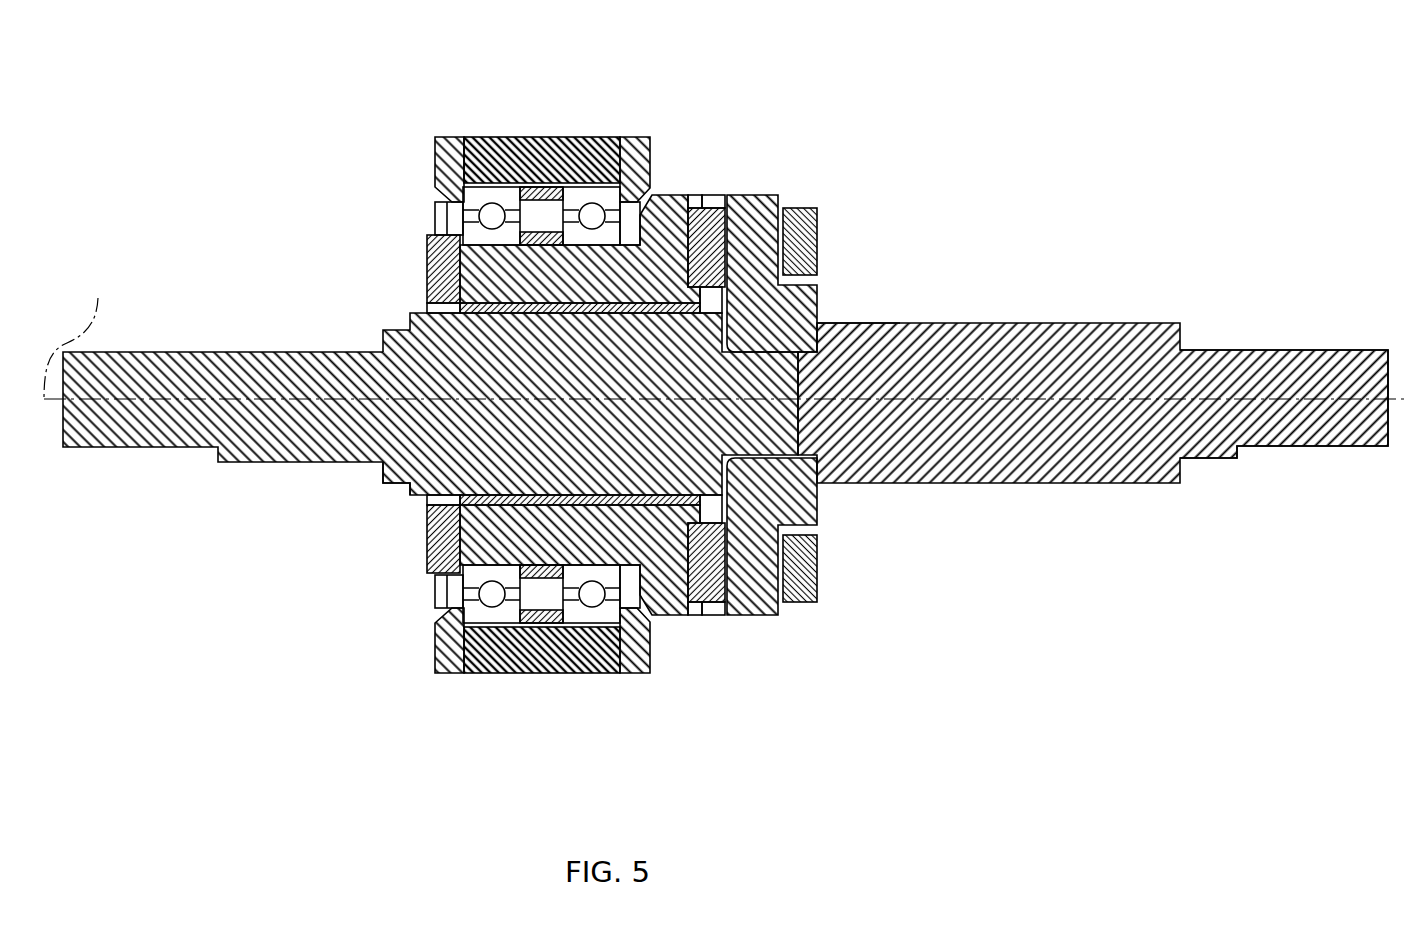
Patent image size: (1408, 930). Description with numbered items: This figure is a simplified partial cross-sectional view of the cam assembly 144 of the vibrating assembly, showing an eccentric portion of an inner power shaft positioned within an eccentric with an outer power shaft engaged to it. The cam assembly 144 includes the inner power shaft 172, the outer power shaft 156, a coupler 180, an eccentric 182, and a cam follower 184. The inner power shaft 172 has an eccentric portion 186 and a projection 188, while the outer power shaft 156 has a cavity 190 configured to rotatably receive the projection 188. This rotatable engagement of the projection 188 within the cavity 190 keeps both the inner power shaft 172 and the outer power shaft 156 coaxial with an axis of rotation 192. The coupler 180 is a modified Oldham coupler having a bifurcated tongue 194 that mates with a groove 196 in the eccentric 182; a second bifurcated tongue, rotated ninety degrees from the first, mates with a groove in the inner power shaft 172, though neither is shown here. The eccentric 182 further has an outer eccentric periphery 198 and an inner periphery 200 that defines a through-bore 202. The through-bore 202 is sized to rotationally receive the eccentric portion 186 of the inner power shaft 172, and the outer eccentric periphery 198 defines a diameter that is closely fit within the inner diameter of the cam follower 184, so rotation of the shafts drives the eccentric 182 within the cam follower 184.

The cam assembly 144 is at (1093, 502).
The outer power shaft 156 is at (1283, 447).
The inner power shaft 172 is at (170, 447).
The coupler 180 is at (785, 420).
The eccentric 182 is at (777, 617).
The cam follower 184 is at (520, 675).
The eccentric portion 186 is at (816, 558).
The projection 188 is at (797, 403).
The cavity 190 is at (843, 355).
The axis of rotation 192 is at (76, 331).
The bifurcated tongue 194 is at (712, 195).
The groove 196 is at (698, 195).
The outer eccentric periphery 198 is at (512, 568).
The inner periphery 200 is at (425, 322).
The through-bore 202 is at (378, 505).